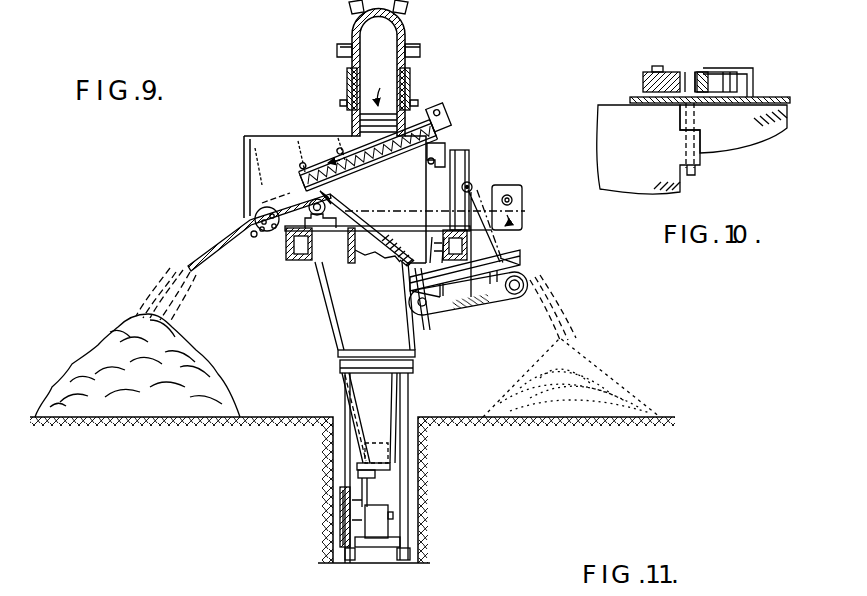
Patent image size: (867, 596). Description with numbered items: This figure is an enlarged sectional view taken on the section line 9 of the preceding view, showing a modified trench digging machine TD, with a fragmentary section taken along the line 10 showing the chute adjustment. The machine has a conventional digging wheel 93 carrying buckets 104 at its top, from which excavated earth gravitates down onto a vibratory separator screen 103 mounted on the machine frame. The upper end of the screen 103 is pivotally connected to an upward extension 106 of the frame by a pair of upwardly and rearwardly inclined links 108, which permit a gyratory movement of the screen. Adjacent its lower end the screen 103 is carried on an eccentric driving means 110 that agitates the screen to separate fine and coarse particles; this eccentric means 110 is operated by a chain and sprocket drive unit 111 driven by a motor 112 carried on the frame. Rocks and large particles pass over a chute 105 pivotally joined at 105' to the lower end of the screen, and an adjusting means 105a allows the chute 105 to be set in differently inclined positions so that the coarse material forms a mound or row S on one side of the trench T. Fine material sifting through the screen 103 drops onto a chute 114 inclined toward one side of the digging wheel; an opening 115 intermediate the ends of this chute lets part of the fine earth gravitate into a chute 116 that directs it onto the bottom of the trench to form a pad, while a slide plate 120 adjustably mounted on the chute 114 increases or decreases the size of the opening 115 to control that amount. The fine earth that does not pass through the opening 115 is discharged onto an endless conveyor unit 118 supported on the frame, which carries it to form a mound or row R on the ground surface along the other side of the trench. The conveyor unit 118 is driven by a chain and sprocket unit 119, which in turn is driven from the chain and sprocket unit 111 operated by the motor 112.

In FIG. 9, the digging wheel 93 is at (412, 78).
In FIG. 9, the buckets 104 is at (353, 28).
In FIG. 9, the trench digging machine TD is at (338, 100).
In FIG. 9, the section line 10- 10 is at (220, 203).
In FIG. 9, the vibratory separator screen 103 is at (364, 156).
In FIG. 9, the links 108 is at (450, 147).
In FIG. 9, the upward extension 106 is at (468, 162).
In FIG. 9, the chain and sprocket drive unit 111 is at (472, 186).
In FIG. 9, the motor 112 is at (522, 213).
In FIG. 9, the chain and sprocket unit 119 is at (508, 246).
In FIG. 9, the eccentric driving means 110 is at (332, 199).
In FIG. 9, the chute 114 is at (364, 237).
In FIG. 9, the opening 115 is at (388, 232).
In FIG. 9, the slide plate 120 is at (398, 256).
In FIG. 9, the section line 9- 9 is at (292, 268).
In FIG. 9, the chute 105 is at (251, 232).
In FIG. 10, the chute 105 is at (692, 161).
In FIG. 9, the pivotal joint 105' is at (268, 233).
In FIG. 10, the pivotal joint 105' is at (725, 130).
In FIG. 9, the adjusting means 105a is at (251, 238).
In FIG. 10, the adjusting means 105a is at (681, 71).
In FIG. 9, the mound or row S is at (182, 346).
In FIG. 9, the mound or row R is at (615, 368).
In FIG. 9, the chute 116 is at (365, 370).
In FIG. 9, the endless conveyor unit 118 is at (480, 320).
In FIG. 9, the pit machinery T is at (418, 558).